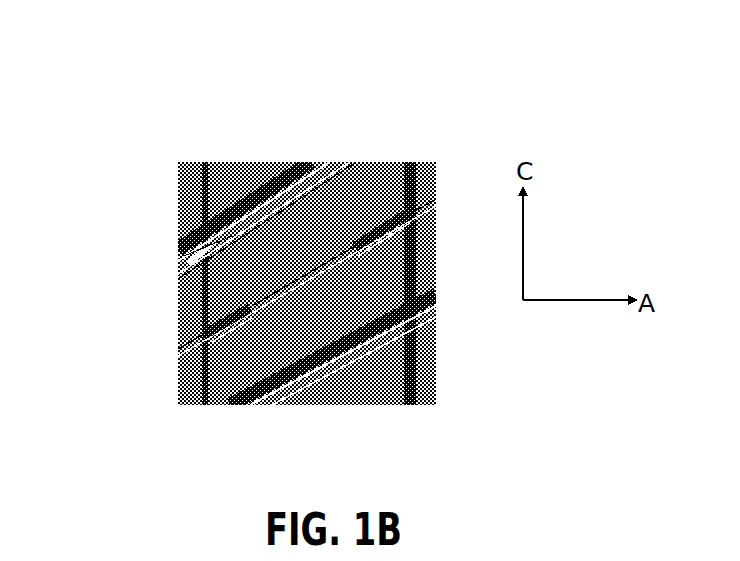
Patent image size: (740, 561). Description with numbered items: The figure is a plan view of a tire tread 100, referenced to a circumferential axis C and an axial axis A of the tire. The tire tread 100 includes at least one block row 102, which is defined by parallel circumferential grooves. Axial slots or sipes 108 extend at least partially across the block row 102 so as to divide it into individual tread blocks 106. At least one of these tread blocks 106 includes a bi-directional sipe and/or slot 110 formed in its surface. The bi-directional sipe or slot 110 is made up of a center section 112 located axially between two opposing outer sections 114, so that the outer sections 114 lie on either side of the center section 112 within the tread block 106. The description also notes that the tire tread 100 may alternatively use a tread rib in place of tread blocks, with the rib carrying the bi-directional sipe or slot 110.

The tire tread 100 is at (279, 254).
The block row 102 is at (300, 152).
The tread block 106 is at (218, 268).
The axial slot/sipe 108 is at (217, 240).
The bi-directional sipe and/or slot 110 is at (335, 268).
The center section 112 is at (280, 298).
The outer sections 114 is at (222, 331).